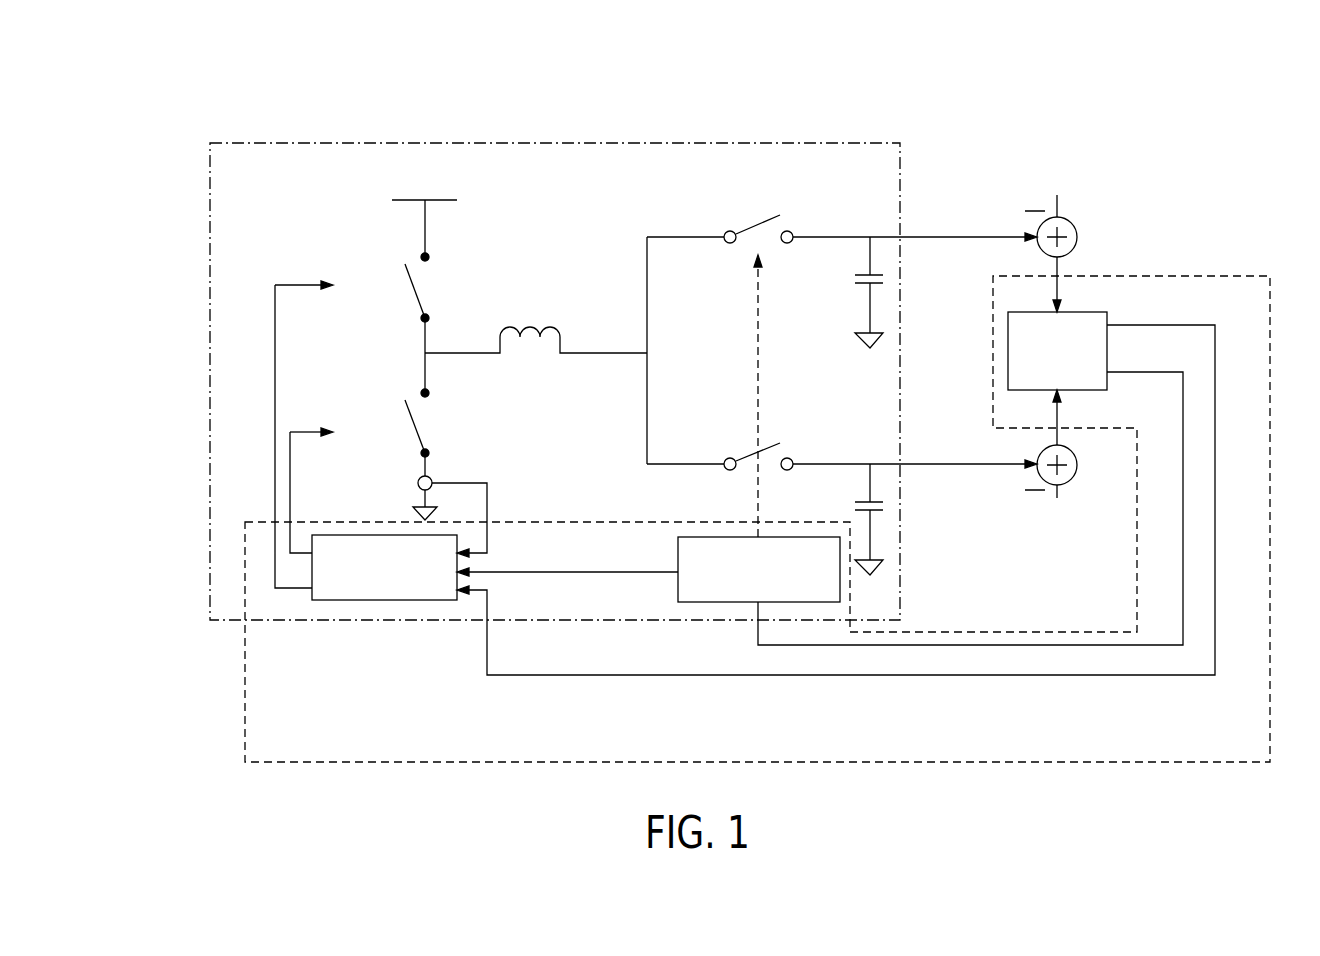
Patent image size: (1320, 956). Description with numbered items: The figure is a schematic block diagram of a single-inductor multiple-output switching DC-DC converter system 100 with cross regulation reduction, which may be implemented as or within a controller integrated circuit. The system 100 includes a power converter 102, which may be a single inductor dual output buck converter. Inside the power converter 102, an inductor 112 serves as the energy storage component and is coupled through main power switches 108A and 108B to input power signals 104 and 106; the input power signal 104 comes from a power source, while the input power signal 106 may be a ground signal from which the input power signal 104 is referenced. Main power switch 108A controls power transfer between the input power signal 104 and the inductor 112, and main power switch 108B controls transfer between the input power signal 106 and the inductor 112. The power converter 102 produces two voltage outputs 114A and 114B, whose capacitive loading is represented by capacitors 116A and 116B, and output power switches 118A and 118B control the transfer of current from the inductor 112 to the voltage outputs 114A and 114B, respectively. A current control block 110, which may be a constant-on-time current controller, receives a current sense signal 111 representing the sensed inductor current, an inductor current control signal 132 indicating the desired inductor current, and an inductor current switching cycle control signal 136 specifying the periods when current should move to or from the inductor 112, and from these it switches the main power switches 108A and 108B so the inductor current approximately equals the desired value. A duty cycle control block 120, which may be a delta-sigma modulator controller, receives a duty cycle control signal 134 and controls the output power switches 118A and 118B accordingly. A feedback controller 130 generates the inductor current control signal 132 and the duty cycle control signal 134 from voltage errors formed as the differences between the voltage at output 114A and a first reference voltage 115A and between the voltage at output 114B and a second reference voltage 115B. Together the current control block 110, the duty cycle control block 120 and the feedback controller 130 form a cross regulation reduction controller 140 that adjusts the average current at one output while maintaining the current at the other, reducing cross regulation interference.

The DC-DC converter system 100 is at (195, 99).
The power converter 102 is at (210, 186).
The input power signal 104 is at (452, 181).
The input power signal 106 is at (458, 497).
The main power switch 108A is at (357, 248).
The main power switch 108B is at (357, 393).
The current control block 110 is at (383, 601).
The current sense signal 111 is at (487, 528).
The inductor 112 is at (560, 308).
The voltage output 114A is at (910, 237).
The voltage output 114B is at (910, 464).
The first reference voltage 115A is at (1095, 181).
The second reference voltage 115B is at (1078, 462).
The capacitor 116A is at (882, 285).
The capacitor 116B is at (882, 512).
The output power switch 118A is at (725, 208).
The output power switch 118B is at (726, 432).
The duty cycle control block 120 is at (700, 537).
The feedback controller 130 is at (1088, 312).
The inductor current control signal 132 is at (975, 676).
The duty cycle control signal 134 is at (1140, 646).
The inductor current switching cycle control signal 136 is at (572, 573).
The cross regulation reduction controller 140 is at (245, 740).